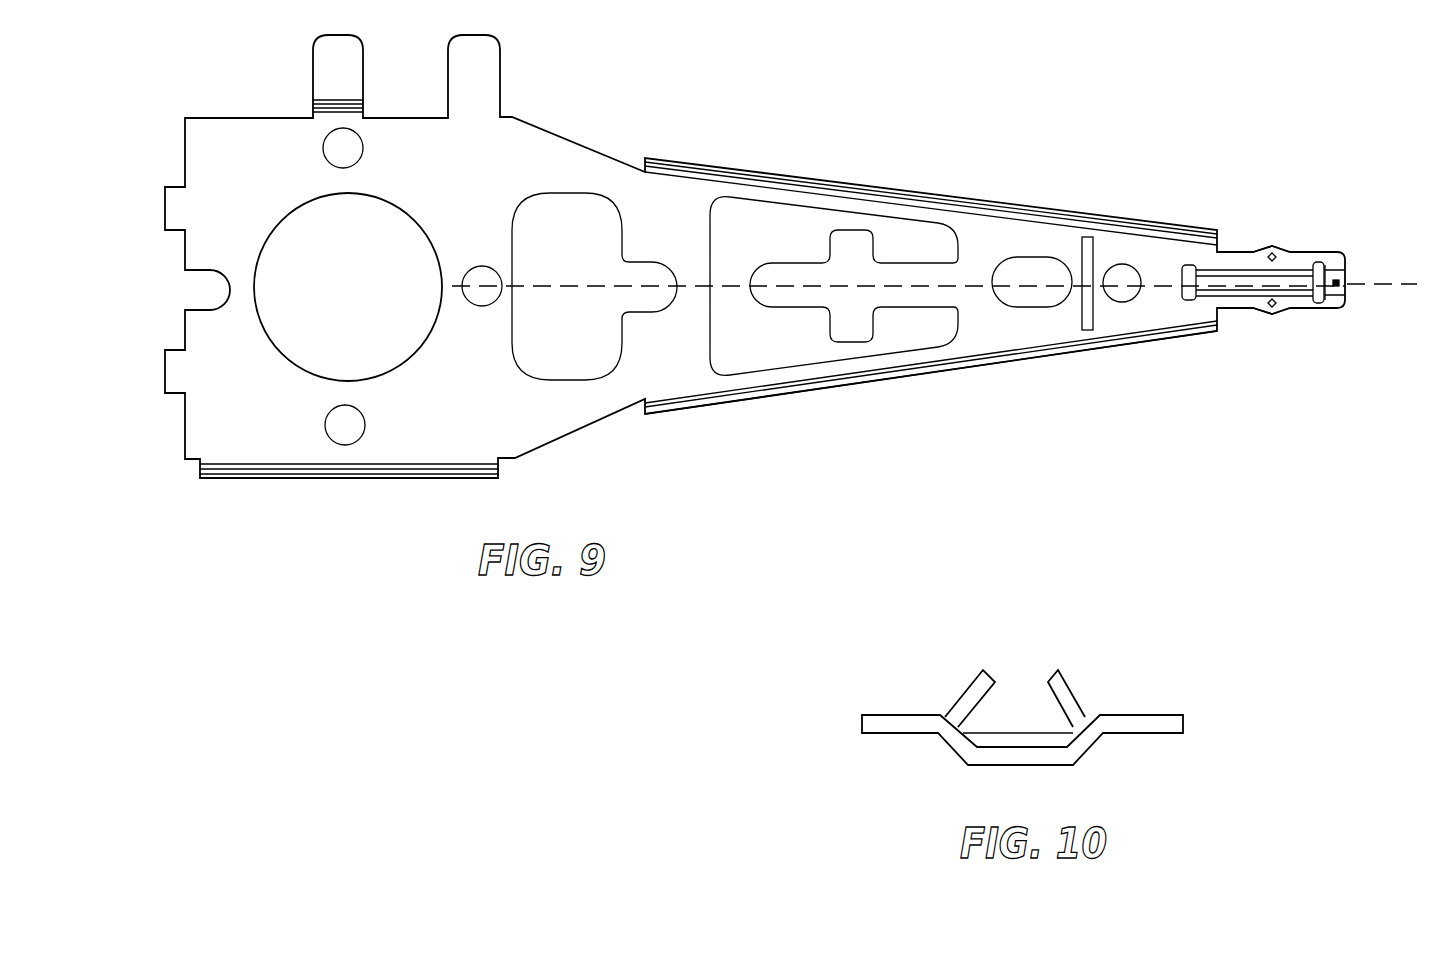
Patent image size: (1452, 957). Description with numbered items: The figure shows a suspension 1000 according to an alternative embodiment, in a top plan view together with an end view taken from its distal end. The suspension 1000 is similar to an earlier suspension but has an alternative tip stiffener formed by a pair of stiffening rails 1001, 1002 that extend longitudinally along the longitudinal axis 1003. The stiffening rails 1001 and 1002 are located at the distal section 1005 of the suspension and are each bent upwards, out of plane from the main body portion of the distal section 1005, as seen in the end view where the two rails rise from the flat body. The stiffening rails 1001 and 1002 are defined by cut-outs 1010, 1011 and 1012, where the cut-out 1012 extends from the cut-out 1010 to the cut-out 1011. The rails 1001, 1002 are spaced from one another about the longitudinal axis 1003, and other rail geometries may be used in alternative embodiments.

In FIG. 9, the suspension 1000 is at (756, 128).
In FIG. 10, the suspension 1000 is at (1158, 650).
In FIG. 9, the stiffening rail 1001 is at (1300, 262).
In FIG. 10, the stiffening rail 1001 is at (1073, 682).
In FIG. 9, the stiffening rail 1002 is at (1245, 295).
In FIG. 10, the stiffening rail 1002 is at (973, 682).
In FIG. 9, the longitudinal axis 1003 is at (1380, 288).
In FIG. 9, the distal section 1005 is at (1347, 190).
In FIG. 9, the cut-out 1010 is at (1176, 286).
In FIG. 9, the cut-out 1011 is at (1317, 300).
In FIG. 9, the cut-out 1012 is at (1250, 278).